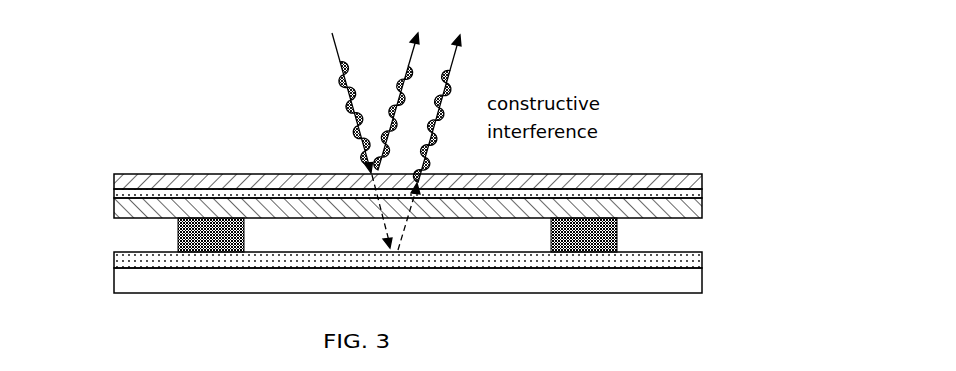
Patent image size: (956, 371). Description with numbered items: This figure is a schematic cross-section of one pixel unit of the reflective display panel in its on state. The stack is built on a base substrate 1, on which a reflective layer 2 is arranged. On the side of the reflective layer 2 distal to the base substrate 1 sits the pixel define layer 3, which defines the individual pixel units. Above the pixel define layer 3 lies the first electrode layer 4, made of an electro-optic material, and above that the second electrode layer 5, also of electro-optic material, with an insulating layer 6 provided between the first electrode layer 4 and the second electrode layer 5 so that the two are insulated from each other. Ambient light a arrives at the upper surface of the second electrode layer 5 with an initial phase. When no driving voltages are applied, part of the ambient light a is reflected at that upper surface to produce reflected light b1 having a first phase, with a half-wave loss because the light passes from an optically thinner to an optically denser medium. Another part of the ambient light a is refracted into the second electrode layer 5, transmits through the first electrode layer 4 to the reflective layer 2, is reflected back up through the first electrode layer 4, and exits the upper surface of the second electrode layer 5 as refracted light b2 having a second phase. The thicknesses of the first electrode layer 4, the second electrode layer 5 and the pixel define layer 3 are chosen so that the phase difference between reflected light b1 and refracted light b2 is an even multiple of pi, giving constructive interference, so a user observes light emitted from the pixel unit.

The base substrate 1 is at (123, 278).
The reflective layer 2 is at (123, 258).
The pixel define layer 3 is at (334, 235).
The first electrode layer 4 is at (123, 211).
The second electrode layer 5 is at (123, 183).
The insulating layer 6 is at (122, 195).
The ambient light a is at (336, 50).
The reflected light b1 is at (412, 50).
The refracted light b2 is at (457, 52).